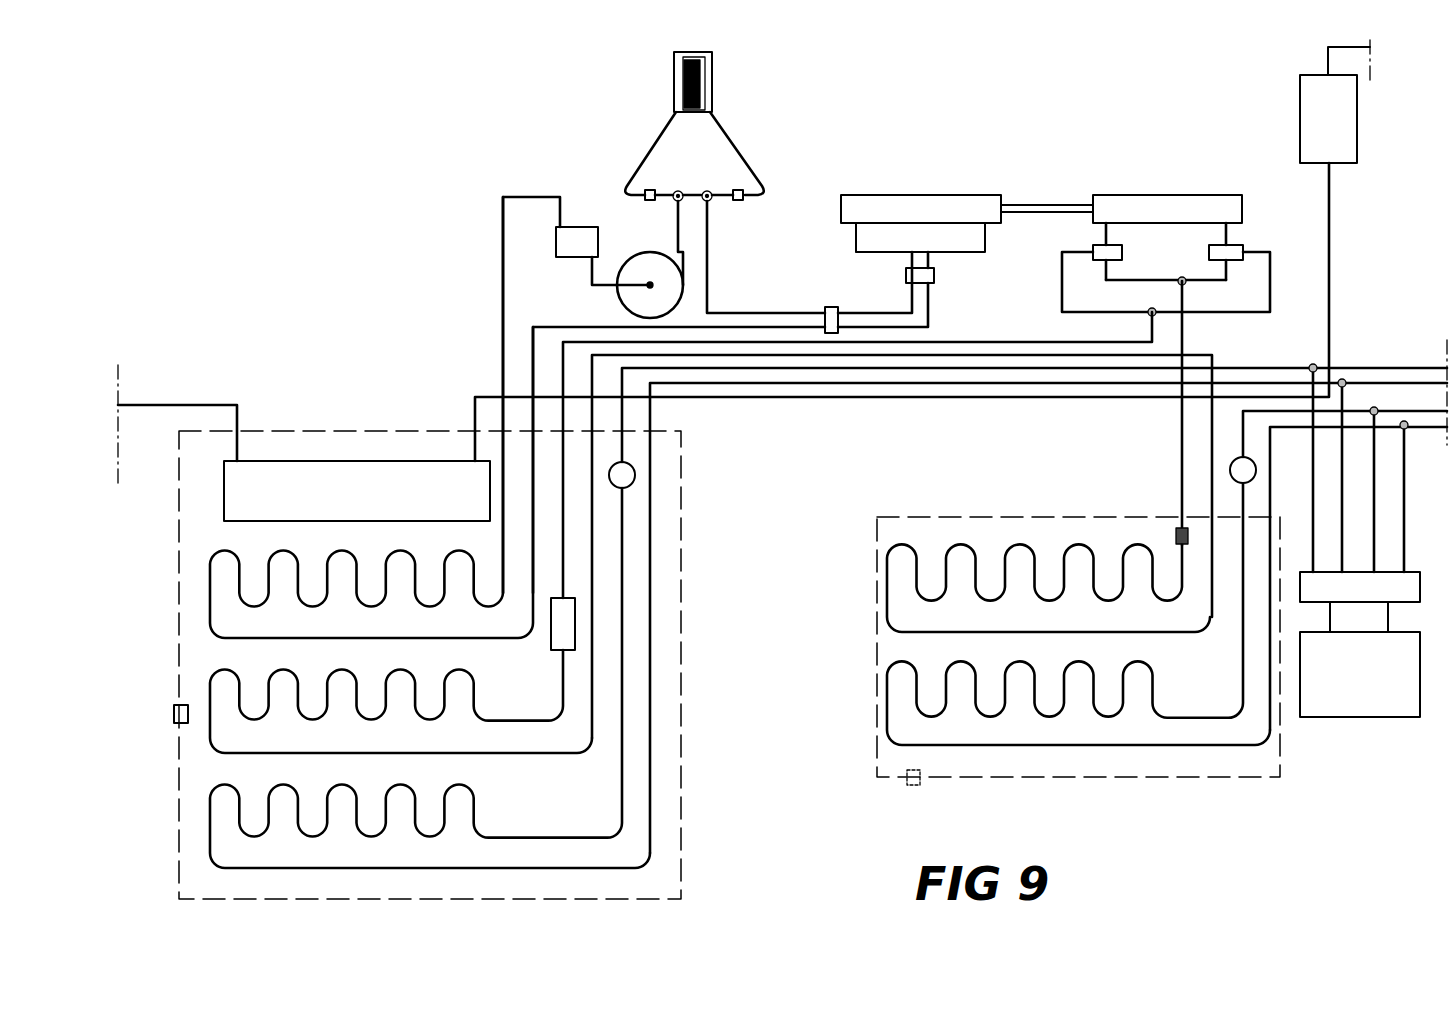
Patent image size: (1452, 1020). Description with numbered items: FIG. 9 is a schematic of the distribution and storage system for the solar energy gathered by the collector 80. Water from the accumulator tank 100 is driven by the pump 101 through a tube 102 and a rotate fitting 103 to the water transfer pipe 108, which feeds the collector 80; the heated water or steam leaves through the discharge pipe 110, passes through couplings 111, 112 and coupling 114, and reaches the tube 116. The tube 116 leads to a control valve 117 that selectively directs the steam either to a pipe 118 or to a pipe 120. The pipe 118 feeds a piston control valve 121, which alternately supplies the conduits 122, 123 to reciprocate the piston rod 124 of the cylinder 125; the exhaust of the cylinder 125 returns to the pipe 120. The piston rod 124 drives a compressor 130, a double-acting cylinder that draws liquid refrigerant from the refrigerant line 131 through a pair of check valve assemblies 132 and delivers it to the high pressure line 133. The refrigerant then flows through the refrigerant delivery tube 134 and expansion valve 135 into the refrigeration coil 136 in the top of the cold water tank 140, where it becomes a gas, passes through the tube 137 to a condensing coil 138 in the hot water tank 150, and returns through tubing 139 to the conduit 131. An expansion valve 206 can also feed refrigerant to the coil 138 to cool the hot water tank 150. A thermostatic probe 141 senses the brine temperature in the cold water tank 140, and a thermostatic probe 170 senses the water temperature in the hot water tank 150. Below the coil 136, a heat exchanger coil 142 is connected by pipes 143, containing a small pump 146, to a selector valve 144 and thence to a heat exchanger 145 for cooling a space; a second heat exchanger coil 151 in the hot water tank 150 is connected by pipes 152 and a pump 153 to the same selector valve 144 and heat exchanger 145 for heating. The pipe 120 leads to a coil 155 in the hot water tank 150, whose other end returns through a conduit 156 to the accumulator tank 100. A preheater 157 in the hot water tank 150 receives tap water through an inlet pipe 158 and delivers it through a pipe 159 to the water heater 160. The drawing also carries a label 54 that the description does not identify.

The collector housing 54 is at (714, 88).
The collector 80 is at (684, 82).
The water transfer pipe 108 is at (650, 160).
The discharge pipe 110 is at (730, 157).
The coupling 112 is at (650, 201).
The coupling 111 is at (739, 201).
The rotate fitting 103 is at (679, 190).
The coupling 114 is at (706, 190).
The accumulator tank 100 is at (570, 227).
The pump 101 is at (652, 272).
The tube 102 is at (683, 247).
The tube 116 is at (708, 284).
The conduit 156 is at (503, 310).
The pipe 120 is at (562, 327).
The control valve 117 is at (828, 307).
The pipe 118 is at (882, 313).
The piston control valve 121 is at (935, 277).
The conduit 122 is at (890, 256).
The conduit 123 is at (970, 256).
The cylinder 125 is at (922, 195).
The piston rod 124 is at (1022, 205).
The compressor 130 is at (1178, 195).
The check valve assemblies 132 is at (1209, 252).
The high pressure line 133 is at (1200, 285).
The refrigerant line 131 is at (1088, 312).
The tubing 139 is at (1027, 342).
The tube 137 is at (595, 550).
The pipes 152 is at (625, 722).
The pump 153 is at (637, 478).
The pipe 159 is at (478, 397).
The water heater 160 is at (1300, 120).
The inlet pipe 158 is at (198, 405).
The hot water tank 150 is at (178, 757).
The thermostatic probe 170 is at (176, 707).
The preheater 157 is at (372, 461).
The coil 155 is at (238, 565).
The expansion valve 206 is at (551, 640).
The condensing coil 138 is at (478, 695).
The second heat exchanger coil 151 is at (478, 800).
The cold water tank 140 is at (877, 690).
The thermostatic probe 141 is at (907, 782).
The refrigerant delivery tube 134 is at (1180, 445).
The small pump 146 is at (1182, 486).
The expansion valve 135 is at (1177, 528).
The refrigeration coil 136 is at (1080, 540).
The pipes 143 is at (1272, 490).
The heat exchanger coil 142 is at (1036, 676).
The selector valve 144 is at (1405, 584).
The heat exchanger 145 is at (1398, 642).